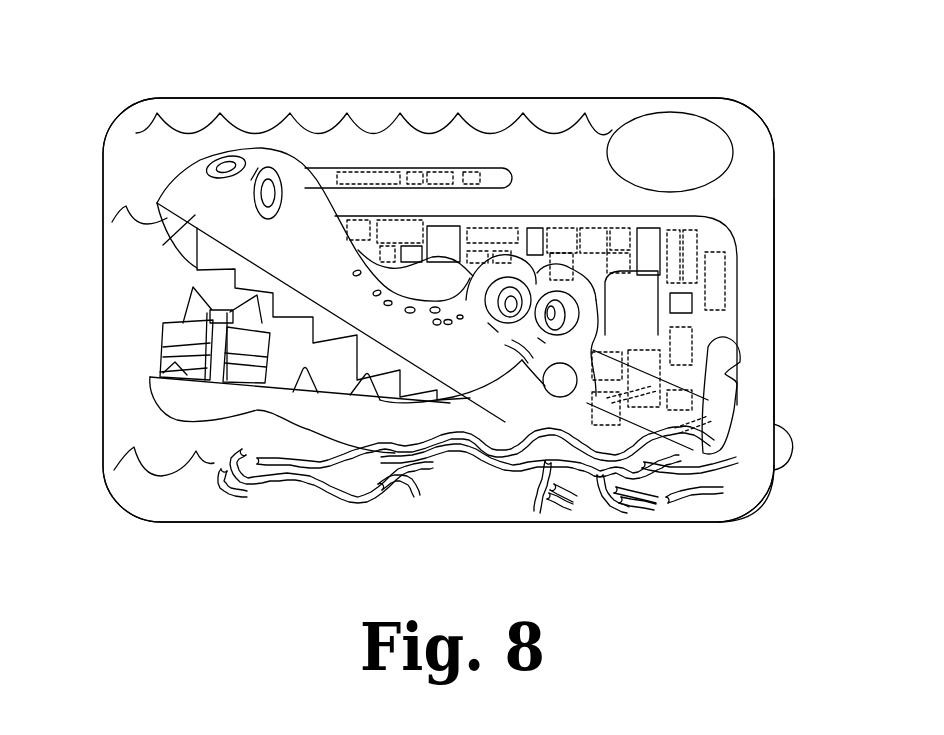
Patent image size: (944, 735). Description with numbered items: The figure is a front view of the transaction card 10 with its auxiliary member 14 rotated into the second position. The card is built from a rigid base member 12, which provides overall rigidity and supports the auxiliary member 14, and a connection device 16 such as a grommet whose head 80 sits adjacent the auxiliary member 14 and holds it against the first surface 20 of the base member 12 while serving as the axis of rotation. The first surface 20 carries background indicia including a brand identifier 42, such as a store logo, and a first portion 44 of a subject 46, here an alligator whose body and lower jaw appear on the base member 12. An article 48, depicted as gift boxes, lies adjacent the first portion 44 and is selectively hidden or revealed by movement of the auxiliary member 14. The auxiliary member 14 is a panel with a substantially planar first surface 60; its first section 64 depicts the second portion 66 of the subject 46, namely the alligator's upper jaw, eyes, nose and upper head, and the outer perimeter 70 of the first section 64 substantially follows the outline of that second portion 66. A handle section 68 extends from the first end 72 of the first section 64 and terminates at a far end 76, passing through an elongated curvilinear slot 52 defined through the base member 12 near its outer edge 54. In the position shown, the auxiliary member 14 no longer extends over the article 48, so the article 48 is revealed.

The transaction card 10 is at (137, 72).
The base member 12 is at (123, 167).
The auxiliary member 14 is at (306, 170).
The connection device 16 is at (568, 400).
The first surface 20 is at (757, 208).
The brand identifier 42 is at (707, 160).
The first portion 44 is at (420, 168).
The subject 46 is at (723, 297).
The article 48 is at (180, 335).
The slot 52 is at (726, 370).
The outer edge 54 is at (780, 324).
The first surface 60 is at (237, 242).
The first section 64 is at (200, 186).
The second portion 66 is at (197, 270).
The handle section 68 is at (788, 443).
The outer perimeter 70 is at (165, 192).
The first end 72 is at (600, 310).
The far end 76 is at (783, 466).
The head 80 is at (528, 400).